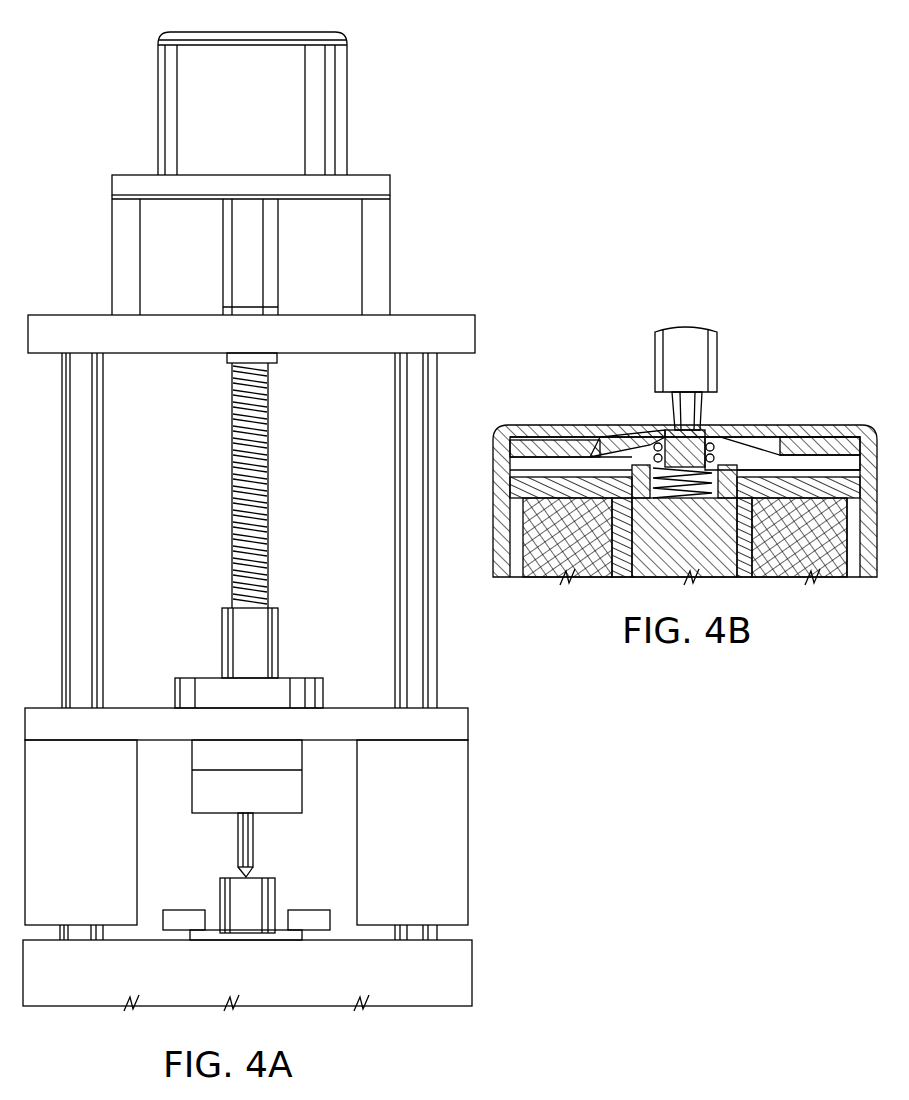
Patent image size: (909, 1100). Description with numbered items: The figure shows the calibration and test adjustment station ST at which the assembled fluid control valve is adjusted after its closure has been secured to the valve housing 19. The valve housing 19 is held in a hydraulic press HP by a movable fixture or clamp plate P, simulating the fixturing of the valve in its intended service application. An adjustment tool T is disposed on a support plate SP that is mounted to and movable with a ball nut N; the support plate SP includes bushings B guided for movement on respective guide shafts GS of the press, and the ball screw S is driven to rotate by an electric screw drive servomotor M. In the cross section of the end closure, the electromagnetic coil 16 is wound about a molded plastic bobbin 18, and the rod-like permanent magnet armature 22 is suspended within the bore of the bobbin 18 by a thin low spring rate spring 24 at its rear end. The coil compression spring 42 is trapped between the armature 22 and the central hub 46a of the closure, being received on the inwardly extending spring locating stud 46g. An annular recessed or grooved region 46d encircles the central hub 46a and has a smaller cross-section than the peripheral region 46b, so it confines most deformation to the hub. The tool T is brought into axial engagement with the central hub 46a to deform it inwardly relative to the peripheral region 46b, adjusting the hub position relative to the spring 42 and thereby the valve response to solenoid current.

In FIG. 4A, the calibration and test adjustment station ST is at (133, 126).
In FIG. 4A, the electric screw drive servomotor M is at (330, 120).
In FIG. 4A, the hydraulic press HP is at (425, 310).
In FIG. 4A, the guide shafts GS is at (87, 540).
In FIG. 4A, the ball screw S is at (266, 528).
In FIG. 4A, the ball nut N is at (298, 673).
In FIG. 4A, the support plate SP is at (525, 748).
In FIG. 4A, the bushings B is at (120, 828).
In FIG. 4A, the adjustment tool T is at (252, 873).
In FIG. 4B, the adjustment tool T is at (695, 410).
In FIG. 4A, the valve housing 19 is at (220, 902).
In FIG. 4A, the clamp plate P is at (285, 937).
In FIG. 4B, the electromagnetic coil 16 is at (832, 557).
In FIG. 4B, the bobbin 18 is at (620, 575).
In FIG. 4B, the permanent magnet armature 22 is at (710, 573).
In FIG. 4B, the spring 24 is at (560, 478).
In FIG. 4B, the coil compression spring 42 is at (712, 455).
In FIG. 4B, the central hub 46a is at (612, 430).
In FIG. 4B, the peripheral region 46b is at (522, 437).
In FIG. 4B, the annular recessed or grooved region 46d is at (566, 437).
In FIG. 4B, the spring locating projection or stud 46g is at (723, 437).